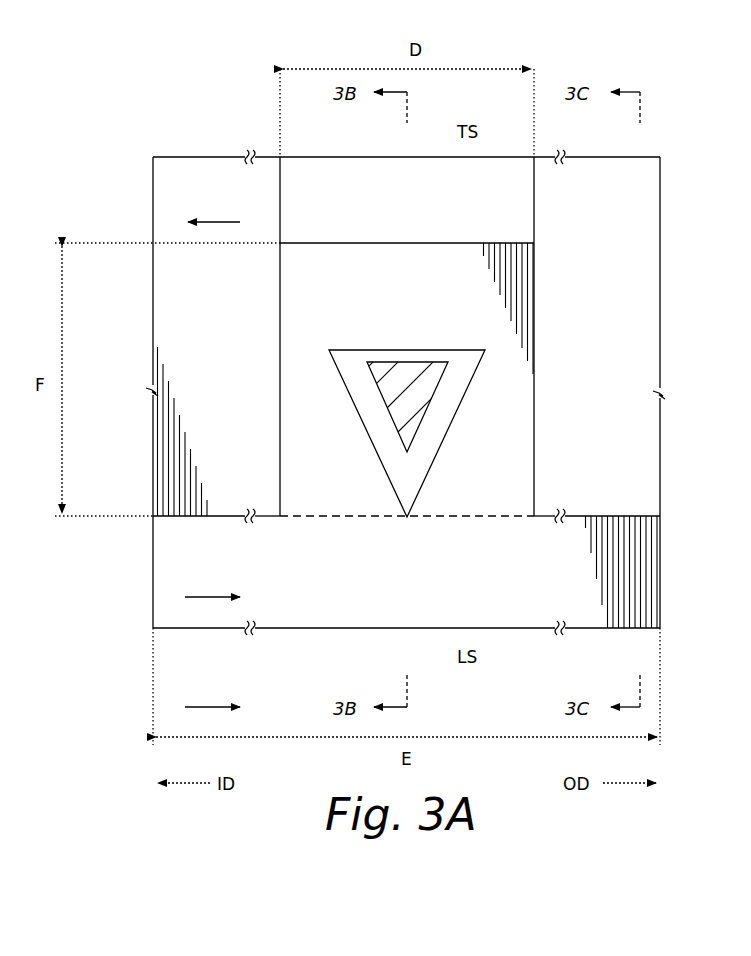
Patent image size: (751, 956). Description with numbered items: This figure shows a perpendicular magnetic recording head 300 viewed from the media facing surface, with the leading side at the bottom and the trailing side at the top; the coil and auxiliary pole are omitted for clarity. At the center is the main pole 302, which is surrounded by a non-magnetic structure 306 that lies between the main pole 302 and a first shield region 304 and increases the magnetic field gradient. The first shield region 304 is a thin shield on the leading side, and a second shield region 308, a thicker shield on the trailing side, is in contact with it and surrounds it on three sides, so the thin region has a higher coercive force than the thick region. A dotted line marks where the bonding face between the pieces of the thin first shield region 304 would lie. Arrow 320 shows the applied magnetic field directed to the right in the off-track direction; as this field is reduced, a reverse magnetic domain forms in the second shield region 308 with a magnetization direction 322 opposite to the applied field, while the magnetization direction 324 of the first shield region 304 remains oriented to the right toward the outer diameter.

The perpendicular magnetic recording head 300 is at (118, 93).
The main pole 302 is at (404, 378).
The first shield region 304 is at (657, 588).
The non-magnetic structure 306 is at (410, 481).
The second shield region 308 is at (657, 198).
The applied magnetic field 320 is at (203, 706).
The magnetization direction of reverse magnetic domain 322 is at (223, 221).
The magnetization direction of first shield region 324 is at (202, 596).